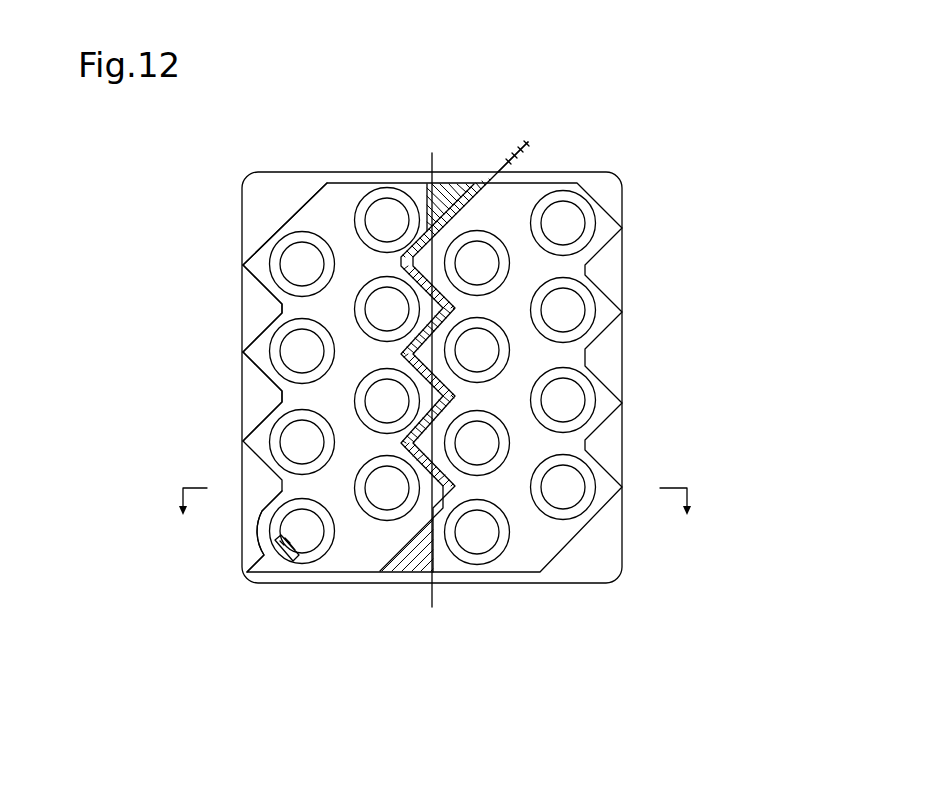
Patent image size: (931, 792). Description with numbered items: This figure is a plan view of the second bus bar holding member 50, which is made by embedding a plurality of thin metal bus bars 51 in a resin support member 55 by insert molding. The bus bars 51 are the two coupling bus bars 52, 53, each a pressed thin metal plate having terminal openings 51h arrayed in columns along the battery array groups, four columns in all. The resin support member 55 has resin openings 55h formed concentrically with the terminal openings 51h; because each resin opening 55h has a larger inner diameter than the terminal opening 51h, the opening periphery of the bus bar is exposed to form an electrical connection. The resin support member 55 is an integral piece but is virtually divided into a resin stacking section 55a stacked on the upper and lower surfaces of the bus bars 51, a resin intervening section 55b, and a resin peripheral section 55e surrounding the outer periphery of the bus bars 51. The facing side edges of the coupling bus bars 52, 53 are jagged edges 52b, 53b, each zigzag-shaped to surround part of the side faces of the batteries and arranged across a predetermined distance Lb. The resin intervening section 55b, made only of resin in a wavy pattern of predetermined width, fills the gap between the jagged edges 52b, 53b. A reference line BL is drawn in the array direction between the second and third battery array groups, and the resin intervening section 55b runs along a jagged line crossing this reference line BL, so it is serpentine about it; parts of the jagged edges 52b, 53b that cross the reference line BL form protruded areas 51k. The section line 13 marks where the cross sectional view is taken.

The second bus bar holding member 50 is at (661, 170).
The bus bars 51 is at (458, 363).
The coupling bus bar 52 is at (347, 182).
The coupling bus bar 53 is at (561, 182).
The jagged edge 52b is at (447, 299).
The jagged edge 53b is at (440, 347).
The protruded areas 51k is at (430, 252).
The terminal openings 51h is at (277, 556).
The resin support member 55 is at (150, 191).
The resin peripheral section 55e is at (262, 214).
The resin stacking section 55a is at (274, 298).
The resin intervening section 55b is at (368, 373).
The resin openings 55h is at (293, 548).
The reference line BL is at (432, 160).
The predetermined distance Lb is at (508, 152).
The line 13- 13 is at (434, 519).